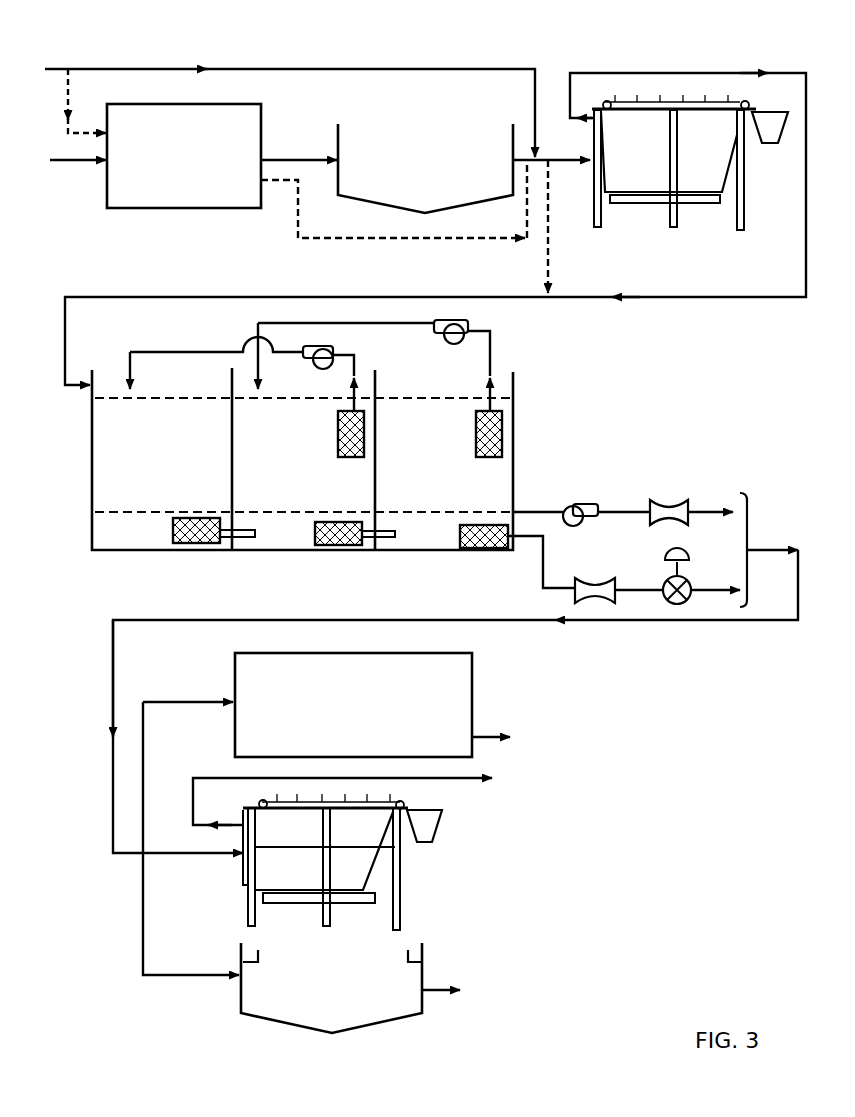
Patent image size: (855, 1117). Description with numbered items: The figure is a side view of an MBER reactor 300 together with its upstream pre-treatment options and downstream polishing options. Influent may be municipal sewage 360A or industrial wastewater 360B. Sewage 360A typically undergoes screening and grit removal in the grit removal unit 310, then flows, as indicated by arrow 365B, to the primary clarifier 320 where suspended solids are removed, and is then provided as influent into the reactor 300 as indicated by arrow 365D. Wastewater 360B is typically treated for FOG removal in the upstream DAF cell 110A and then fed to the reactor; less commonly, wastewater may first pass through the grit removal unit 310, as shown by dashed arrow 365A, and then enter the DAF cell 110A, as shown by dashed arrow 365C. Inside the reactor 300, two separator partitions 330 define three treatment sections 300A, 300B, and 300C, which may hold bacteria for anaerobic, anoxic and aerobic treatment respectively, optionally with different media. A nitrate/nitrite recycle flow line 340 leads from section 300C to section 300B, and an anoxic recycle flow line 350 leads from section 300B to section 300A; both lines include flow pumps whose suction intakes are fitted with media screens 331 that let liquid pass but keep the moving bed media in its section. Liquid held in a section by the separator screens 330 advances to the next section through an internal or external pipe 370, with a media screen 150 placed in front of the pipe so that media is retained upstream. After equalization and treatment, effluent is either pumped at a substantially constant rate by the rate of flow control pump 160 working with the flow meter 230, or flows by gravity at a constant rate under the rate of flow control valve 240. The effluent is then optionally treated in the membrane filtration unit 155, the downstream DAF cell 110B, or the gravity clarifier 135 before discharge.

The municipal sewage 360A is at (84, 163).
The industrial wastewater 360B is at (187, 67).
The dashed arrow 365A is at (73, 97).
The arrow 365B is at (286, 152).
The dashed arrow 365C is at (482, 240).
The arrow 365D is at (558, 251).
The grit removal unit 310 is at (220, 210).
The primary clarifier 320 is at (342, 145).
The upstream DAF cell 110A is at (690, 208).
The MBER reactor 300 is at (515, 442).
The treatment section 300A is at (164, 480).
The treatment section 300B is at (302, 481).
The treatment section 300C is at (428, 481).
The anoxic recycle flow line 350 is at (213, 350).
The nitrate/nitrite recycle flow line 340 is at (495, 352).
The separator partition 330 is at (377, 415).
The media screen 331 is at (477, 423).
The pipe 370 is at (250, 538).
The media screen 150 is at (475, 548).
The rate of flow control pump 160 is at (587, 503).
The flow meter 230 is at (677, 495).
The rate of flow control valve 240 is at (682, 605).
The membrane filtration unit 155 is at (473, 712).
The downstream DAF cell 110B is at (402, 872).
The gravity clarifier 135 is at (425, 978).